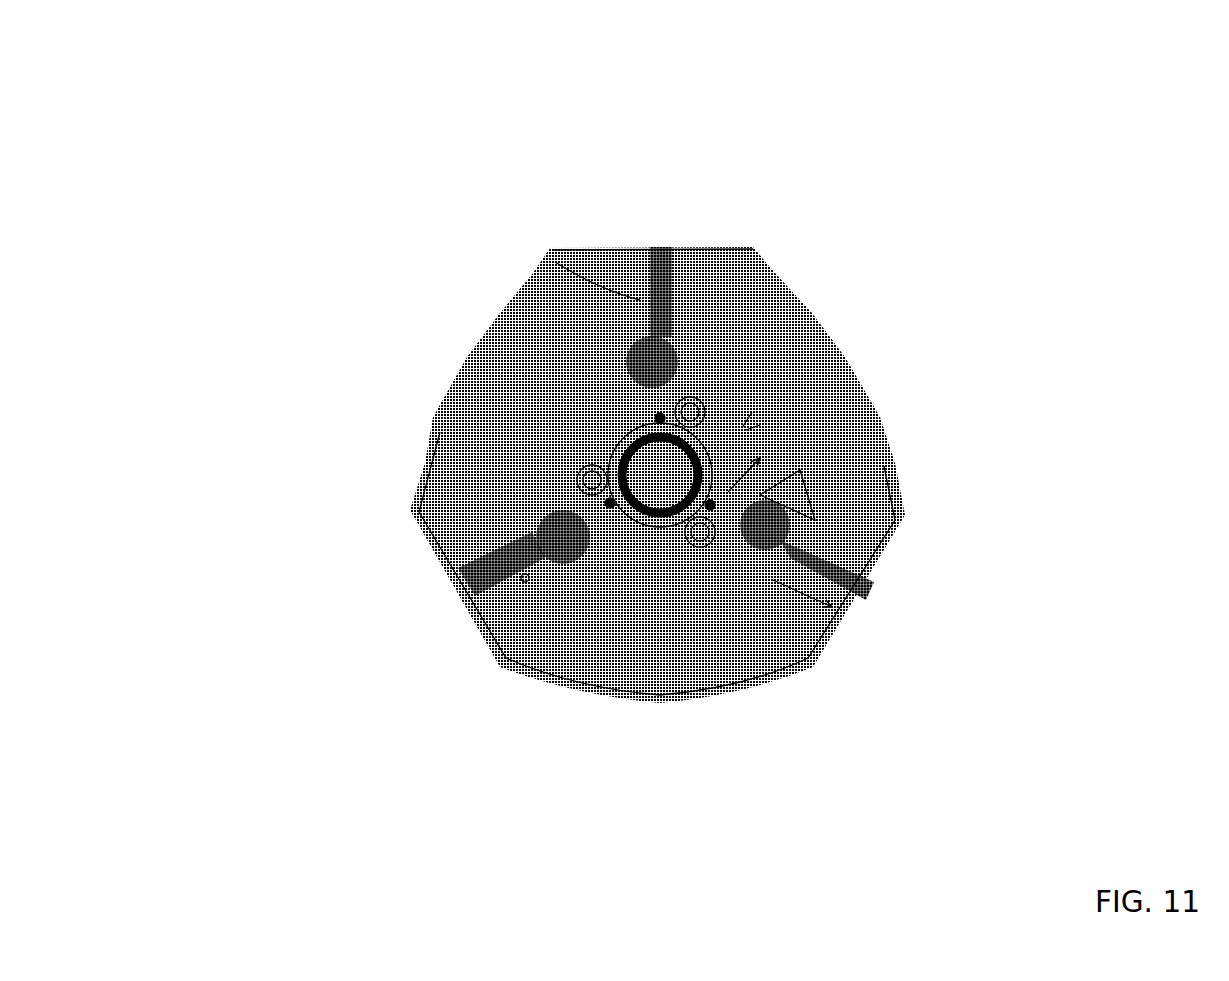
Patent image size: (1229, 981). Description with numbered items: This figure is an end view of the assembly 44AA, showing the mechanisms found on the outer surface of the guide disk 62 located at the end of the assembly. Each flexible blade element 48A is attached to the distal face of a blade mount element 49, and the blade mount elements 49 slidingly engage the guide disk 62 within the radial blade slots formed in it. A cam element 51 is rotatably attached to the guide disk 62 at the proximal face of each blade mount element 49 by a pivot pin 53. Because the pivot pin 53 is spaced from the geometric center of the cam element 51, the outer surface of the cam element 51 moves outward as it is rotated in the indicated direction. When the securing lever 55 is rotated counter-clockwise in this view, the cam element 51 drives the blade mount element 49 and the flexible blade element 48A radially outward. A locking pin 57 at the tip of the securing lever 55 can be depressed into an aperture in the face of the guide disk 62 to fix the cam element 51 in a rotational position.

The assembly 44AA is at (440, 178).
The flexible blade element 48A is at (750, 242).
The blade mount element 49 is at (673, 288).
The cam element 51 is at (672, 365).
The pivot pin 53 is at (640, 338).
The securing lever 55 is at (795, 478).
The locking pin 57 is at (593, 367).
The guide disk 62 is at (665, 660).